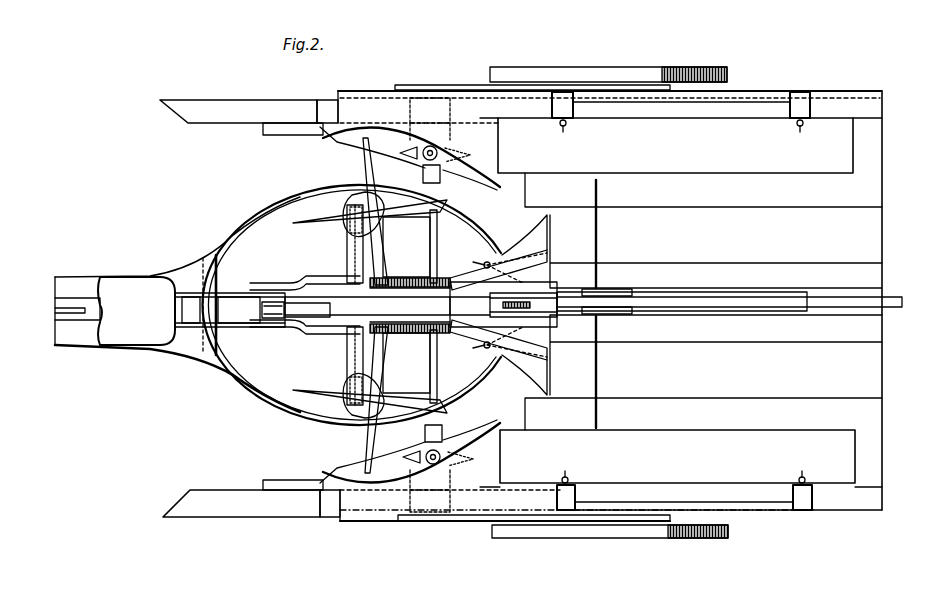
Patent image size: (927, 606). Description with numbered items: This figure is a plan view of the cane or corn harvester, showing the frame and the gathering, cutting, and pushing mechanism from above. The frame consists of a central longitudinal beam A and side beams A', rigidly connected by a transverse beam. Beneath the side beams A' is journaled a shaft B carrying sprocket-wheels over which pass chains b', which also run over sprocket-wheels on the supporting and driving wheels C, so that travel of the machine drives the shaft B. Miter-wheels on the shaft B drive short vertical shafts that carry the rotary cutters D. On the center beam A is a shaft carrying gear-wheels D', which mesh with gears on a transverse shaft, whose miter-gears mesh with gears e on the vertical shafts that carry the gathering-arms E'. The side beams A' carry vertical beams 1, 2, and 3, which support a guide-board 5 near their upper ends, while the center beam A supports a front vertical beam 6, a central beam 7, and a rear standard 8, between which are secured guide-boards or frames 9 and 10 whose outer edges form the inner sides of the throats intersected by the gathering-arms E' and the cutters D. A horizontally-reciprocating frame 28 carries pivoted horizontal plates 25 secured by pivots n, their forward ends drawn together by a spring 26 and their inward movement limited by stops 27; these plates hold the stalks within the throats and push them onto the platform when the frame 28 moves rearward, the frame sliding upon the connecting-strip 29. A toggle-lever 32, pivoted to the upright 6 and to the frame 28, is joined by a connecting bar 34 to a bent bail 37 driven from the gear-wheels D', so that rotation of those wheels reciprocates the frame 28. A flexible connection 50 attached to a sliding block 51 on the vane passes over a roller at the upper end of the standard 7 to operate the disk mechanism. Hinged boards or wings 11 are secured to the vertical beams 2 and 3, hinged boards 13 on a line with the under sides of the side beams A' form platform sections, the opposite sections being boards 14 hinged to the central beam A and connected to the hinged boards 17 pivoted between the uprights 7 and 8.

The central longitudinal beam A is at (57, 312).
The side beams A' is at (241, 294).
The shaft B is at (433, 361).
The supporting and driving wheels C is at (589, 72).
The rotary cutters D is at (410, 305).
The gear-wheels D' is at (410, 306).
The gathering-arms E' is at (374, 305).
The chains b' is at (532, 308).
The gears e is at (350, 201).
The pivots n is at (489, 261).
The vertical beam 1 is at (328, 308).
The vertical beam 2 is at (563, 301).
The vertical beam 3 is at (801, 301).
The guide-board 5 is at (610, 306).
The front vertical beam 6 is at (230, 310).
The central beam 7 is at (513, 317).
The rear standard 8 is at (902, 308).
The guide-boards or frames 9 is at (177, 304).
The guide-boards or frames 10 is at (219, 269).
The hinged boards or wings 11 is at (676, 300).
The hinged boards 13 is at (732, 300).
The boards 14 is at (736, 308).
The hinged boards 17 is at (715, 306).
The pivoted horizontal plates 25 is at (498, 305).
The spring 26 is at (500, 304).
The stops 27 is at (474, 262).
The horizontally-reciprocating frame 28 is at (367, 304).
The connecting-strip 29 is at (239, 310).
The toggle-lever 32 is at (278, 323).
The connecting bar or link 34 is at (278, 306).
The bent bail 37 is at (305, 309).
The flexible connection 50 is at (545, 305).
The sliding block 51 is at (613, 317).